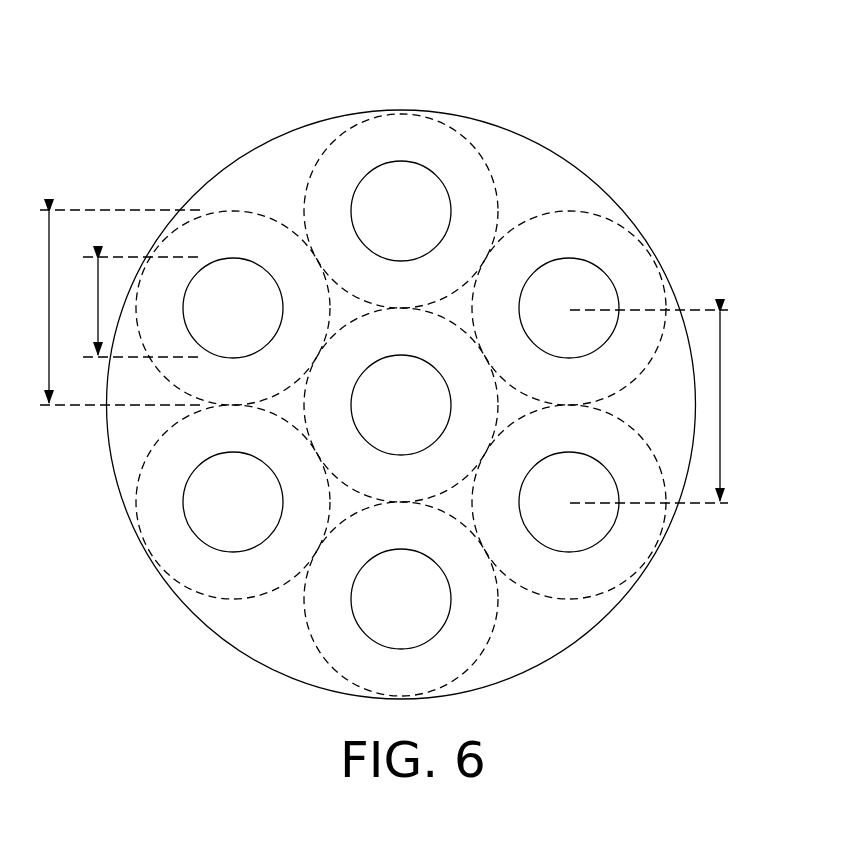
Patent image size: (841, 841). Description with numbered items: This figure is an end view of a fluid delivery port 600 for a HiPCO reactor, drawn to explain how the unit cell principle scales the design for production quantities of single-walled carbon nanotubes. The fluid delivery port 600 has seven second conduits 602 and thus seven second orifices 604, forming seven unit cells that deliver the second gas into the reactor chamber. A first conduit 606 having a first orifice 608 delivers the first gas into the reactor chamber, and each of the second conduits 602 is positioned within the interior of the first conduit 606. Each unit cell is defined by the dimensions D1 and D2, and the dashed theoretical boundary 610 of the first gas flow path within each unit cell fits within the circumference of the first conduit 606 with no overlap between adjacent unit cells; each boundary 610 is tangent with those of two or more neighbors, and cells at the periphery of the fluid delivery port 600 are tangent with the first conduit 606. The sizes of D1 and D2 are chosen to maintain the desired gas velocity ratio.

The fluid delivery port 600 is at (560, 112).
The second conduit 602 is at (335, 405).
The second orifice 604 is at (210, 518).
The first conduit 606 is at (580, 640).
The first orifice 608 is at (520, 653).
The buffer tube 610 is at (345, 310).